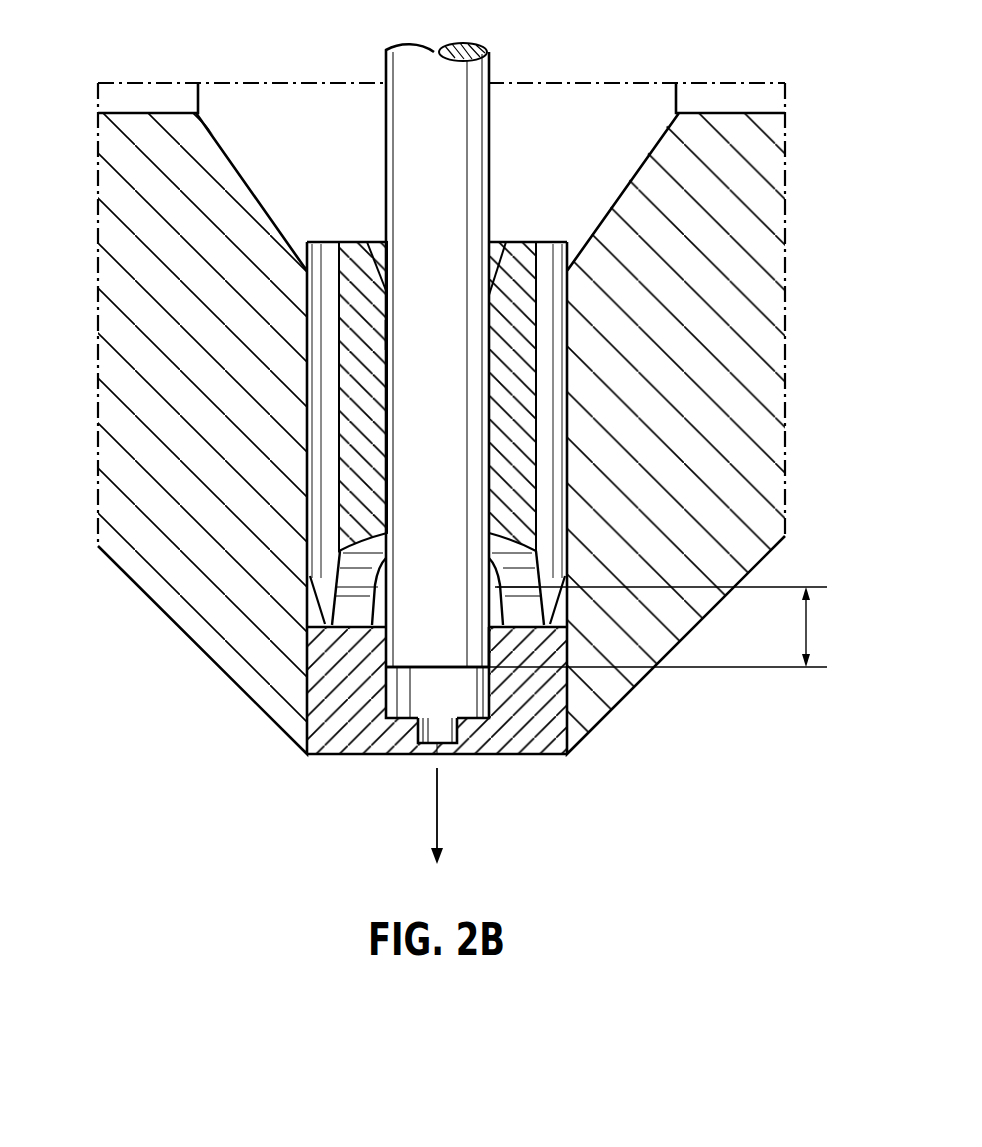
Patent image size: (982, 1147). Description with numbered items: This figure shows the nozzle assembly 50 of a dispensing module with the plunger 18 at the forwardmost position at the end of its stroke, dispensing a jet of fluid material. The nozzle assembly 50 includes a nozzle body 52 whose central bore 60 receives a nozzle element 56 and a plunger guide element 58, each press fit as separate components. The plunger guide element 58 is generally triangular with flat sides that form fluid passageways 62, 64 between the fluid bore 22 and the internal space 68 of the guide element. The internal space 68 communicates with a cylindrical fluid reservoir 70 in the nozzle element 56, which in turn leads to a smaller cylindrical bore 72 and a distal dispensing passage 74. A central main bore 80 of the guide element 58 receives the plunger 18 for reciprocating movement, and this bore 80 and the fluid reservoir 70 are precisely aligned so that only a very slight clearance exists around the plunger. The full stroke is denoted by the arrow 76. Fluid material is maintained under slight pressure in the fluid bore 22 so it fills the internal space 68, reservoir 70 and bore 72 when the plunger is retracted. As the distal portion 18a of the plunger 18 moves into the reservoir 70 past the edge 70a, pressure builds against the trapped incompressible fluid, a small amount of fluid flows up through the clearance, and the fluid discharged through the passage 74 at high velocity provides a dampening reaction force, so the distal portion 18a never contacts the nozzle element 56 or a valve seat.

The plunger 18 is at (405, 52).
The distal portion of the plunger 18a is at (410, 648).
The fluid bore 22 is at (298, 137).
The nozzle assembly 50 is at (810, 169).
The nozzle body 52 is at (748, 273).
The nozzle element 56 is at (341, 743).
The plunger guide element 58 is at (357, 236).
The central bore of the nozzle body 60 is at (552, 318).
The fluid passageway 62 is at (326, 384).
The fluid passageway 64 is at (548, 378).
The internal space of the plunger guide element 68 is at (378, 584).
The cylindrical fluid reservoir 70 is at (470, 698).
The edge of the bore 70a is at (489, 631).
The smaller cylindrical bore 72 is at (450, 732).
The distal dispensing passage 74 is at (435, 755).
The stroke 76 is at (810, 623).
The central main bore of the guide element 80 is at (387, 335).